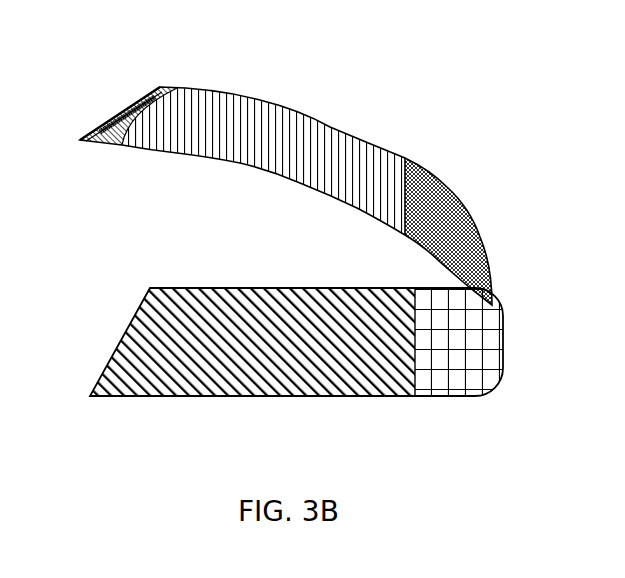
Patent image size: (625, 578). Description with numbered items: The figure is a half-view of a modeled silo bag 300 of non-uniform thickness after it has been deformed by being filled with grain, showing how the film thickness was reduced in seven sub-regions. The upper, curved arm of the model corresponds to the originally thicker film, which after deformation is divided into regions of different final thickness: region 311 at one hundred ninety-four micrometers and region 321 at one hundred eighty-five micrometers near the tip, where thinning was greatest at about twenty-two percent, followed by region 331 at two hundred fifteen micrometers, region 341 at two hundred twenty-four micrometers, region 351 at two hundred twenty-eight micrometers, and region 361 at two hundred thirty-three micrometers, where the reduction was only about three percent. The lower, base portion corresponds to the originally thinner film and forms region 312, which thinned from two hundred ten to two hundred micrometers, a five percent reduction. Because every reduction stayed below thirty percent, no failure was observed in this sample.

The footwear sole structure 300 is at (413, 83).
The region 311 is at (99, 114).
The region 321 is at (136, 91).
The region 331 is at (167, 83).
The region 341 is at (292, 110).
The region 351 is at (444, 190).
The region 312 is at (174, 285).
The region 361 is at (424, 311).